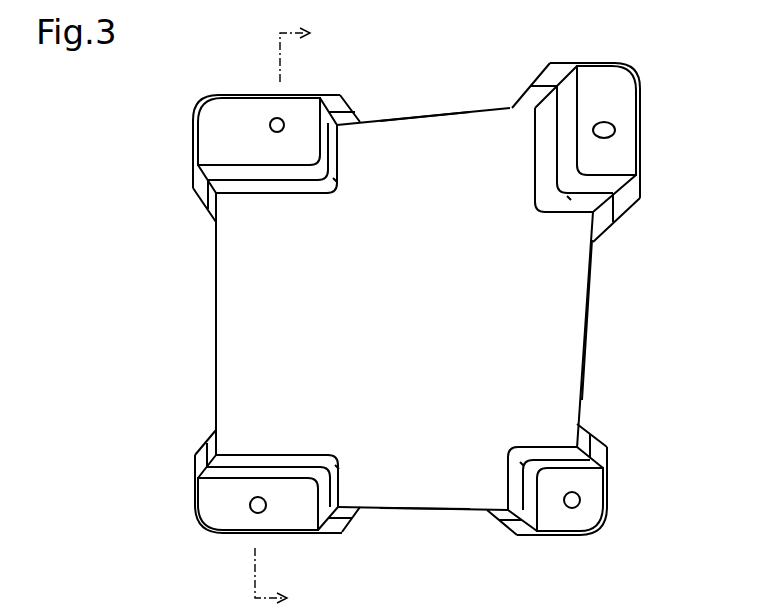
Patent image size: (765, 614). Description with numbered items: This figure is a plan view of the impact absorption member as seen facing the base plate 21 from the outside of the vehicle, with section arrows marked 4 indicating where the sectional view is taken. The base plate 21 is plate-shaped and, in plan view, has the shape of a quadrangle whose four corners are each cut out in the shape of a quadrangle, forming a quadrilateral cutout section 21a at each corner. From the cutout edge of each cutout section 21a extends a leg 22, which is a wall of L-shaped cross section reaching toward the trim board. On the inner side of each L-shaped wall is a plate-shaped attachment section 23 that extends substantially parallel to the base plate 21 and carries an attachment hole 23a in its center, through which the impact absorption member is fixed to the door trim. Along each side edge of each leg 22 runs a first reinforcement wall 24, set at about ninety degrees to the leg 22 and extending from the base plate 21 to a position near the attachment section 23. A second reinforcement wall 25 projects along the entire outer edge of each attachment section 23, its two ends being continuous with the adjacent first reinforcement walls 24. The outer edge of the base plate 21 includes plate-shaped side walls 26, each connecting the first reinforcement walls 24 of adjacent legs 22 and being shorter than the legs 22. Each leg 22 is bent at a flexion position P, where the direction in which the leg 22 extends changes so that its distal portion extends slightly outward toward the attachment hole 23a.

The base plate 21 is at (271, 328).
The cutout section 21a is at (287, 188).
The leg 22 is at (230, 172).
The attachment section 23 is at (250, 106).
The attachment hole 23a is at (283, 124).
The first reinforcement wall 24 is at (340, 95).
The second reinforcement wall 25 is at (216, 96).
The side wall 26 is at (418, 117).
The flexion position P is at (333, 178).
The section line 4- 4 is at (293, 319).